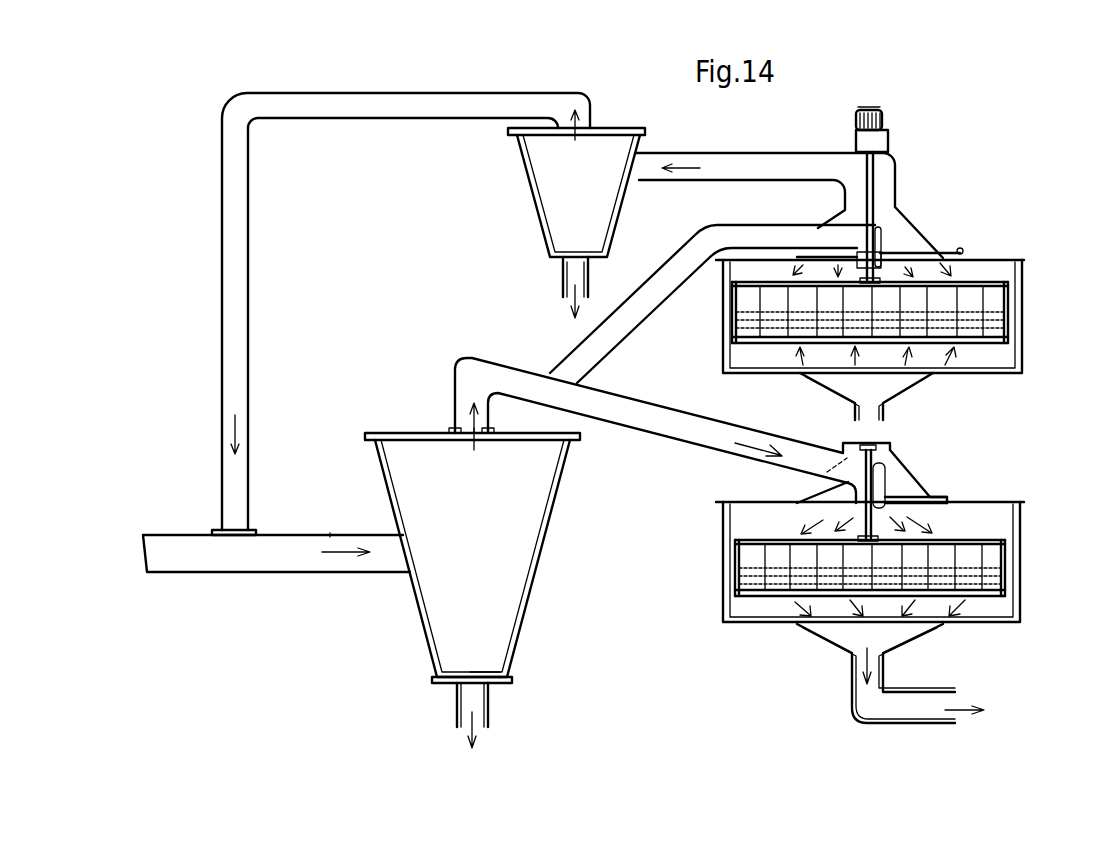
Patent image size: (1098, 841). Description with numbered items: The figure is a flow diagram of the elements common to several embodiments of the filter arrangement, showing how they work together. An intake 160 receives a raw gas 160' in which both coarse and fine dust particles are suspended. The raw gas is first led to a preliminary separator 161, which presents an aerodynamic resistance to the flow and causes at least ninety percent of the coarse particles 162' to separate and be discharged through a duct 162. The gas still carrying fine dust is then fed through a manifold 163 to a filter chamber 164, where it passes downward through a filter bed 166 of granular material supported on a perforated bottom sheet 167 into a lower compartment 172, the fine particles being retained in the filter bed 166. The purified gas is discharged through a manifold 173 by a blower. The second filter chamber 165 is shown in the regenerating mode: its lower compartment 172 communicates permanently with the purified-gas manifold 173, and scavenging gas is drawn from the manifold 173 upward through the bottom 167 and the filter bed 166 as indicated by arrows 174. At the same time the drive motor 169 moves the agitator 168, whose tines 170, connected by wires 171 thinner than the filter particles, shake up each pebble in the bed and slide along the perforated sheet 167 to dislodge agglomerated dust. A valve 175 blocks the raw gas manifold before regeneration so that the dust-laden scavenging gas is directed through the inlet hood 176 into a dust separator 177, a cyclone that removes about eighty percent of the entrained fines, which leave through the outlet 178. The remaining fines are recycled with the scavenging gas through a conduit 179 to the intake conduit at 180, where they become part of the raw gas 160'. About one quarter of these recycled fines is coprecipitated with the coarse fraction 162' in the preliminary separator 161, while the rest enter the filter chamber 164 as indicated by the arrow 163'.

The intake 160 is at (276, 578).
The raw gas 160' is at (327, 511).
The preliminary separator 161 is at (528, 545).
The duct 162 is at (453, 715).
The coarse particles 162' is at (515, 658).
The manifold 163 is at (642, 354).
The arrow 163' is at (441, 417).
The filter chamber 164 is at (1020, 522).
The filter chamber 165 is at (1018, 268).
The filter bed 166 is at (745, 305).
The perforated bottom sheet 167 is at (998, 345).
The agitator 168 is at (985, 281).
The drive motor 169 is at (882, 114).
The tines 170 is at (1008, 290).
The wires 171 is at (735, 330).
The lower compartment 172 is at (996, 362).
The manifold 173 is at (885, 730).
The arrows 174 is at (800, 350).
The valve 175 is at (900, 247).
The inlet hood 176 is at (897, 213).
The dust separator 177 is at (535, 195).
The separator outlet 178 is at (561, 280).
The conduit 179 is at (555, 93).
The intake conduit connection 180 is at (238, 530).